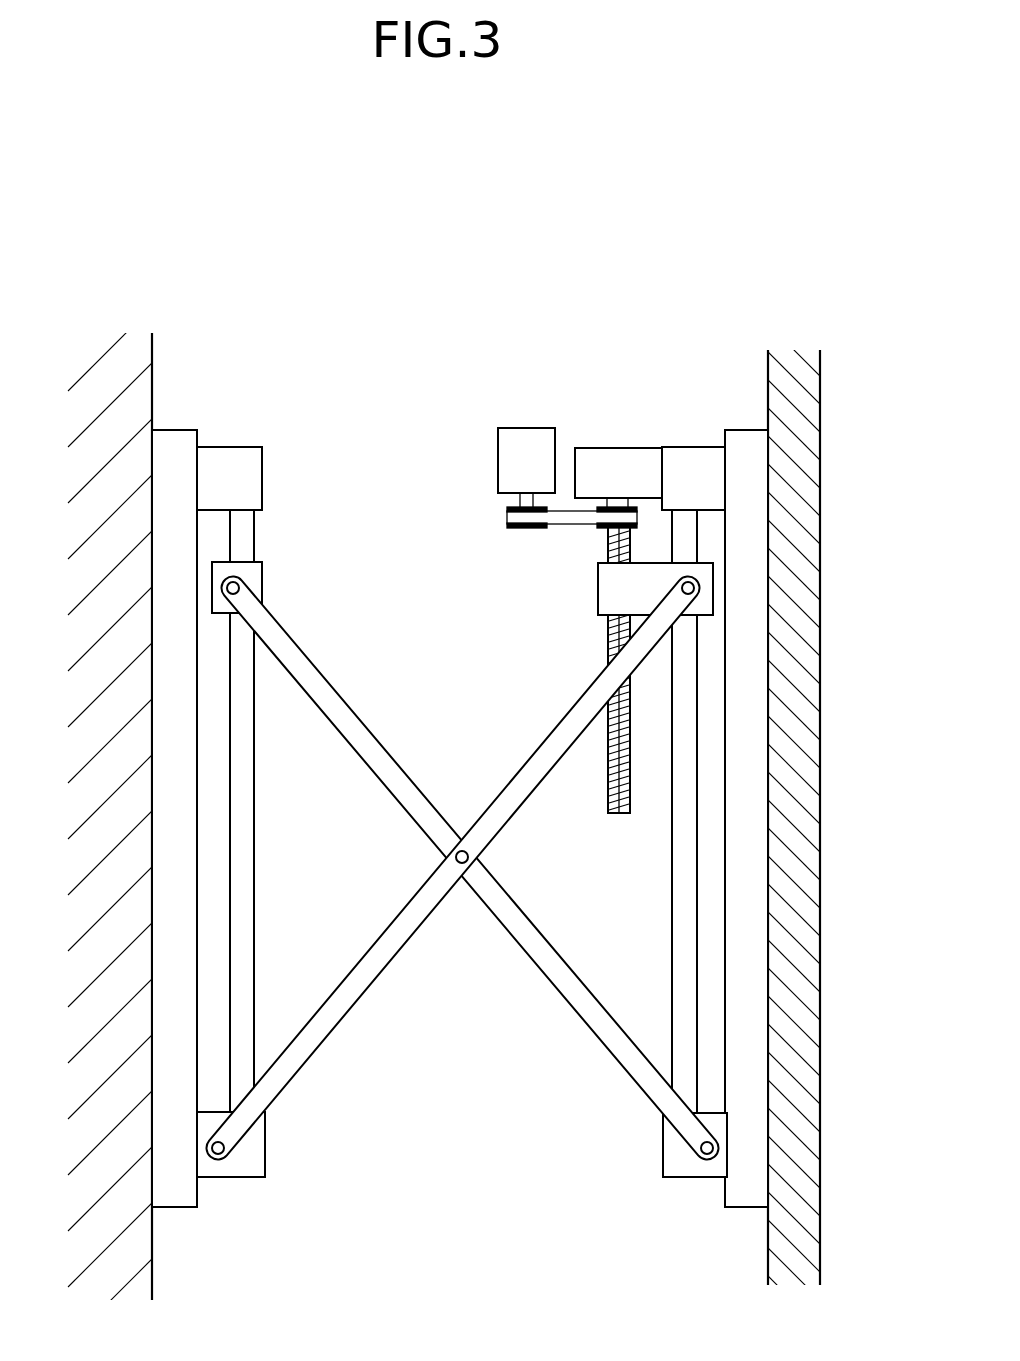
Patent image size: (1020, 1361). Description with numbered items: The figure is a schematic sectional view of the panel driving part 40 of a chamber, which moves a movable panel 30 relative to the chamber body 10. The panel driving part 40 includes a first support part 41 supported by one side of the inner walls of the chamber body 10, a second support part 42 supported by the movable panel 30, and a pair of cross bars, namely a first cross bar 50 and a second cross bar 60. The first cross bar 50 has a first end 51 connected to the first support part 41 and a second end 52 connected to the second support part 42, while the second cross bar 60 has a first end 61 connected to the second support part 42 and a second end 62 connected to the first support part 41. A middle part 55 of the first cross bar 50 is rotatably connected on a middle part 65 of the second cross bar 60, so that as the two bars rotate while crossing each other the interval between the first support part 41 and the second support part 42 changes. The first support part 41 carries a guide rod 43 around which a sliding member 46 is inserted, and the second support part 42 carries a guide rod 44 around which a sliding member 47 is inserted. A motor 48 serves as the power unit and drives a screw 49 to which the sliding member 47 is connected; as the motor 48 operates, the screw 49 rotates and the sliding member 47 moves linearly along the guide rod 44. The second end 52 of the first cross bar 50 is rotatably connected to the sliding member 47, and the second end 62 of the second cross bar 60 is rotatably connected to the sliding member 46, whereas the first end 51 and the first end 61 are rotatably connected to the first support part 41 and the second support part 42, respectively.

The chamber body 10 is at (152, 1255).
The movable panel 30 is at (772, 1243).
The panel driving part 40 is at (406, 486).
The first support part 41 is at (175, 445).
The second support part 42 is at (752, 443).
The guide rod 43 is at (242, 1018).
The guide rod 44 is at (682, 955).
The sliding member 46 is at (255, 572).
The sliding member 47 is at (620, 583).
The motor 48 is at (522, 440).
The screw 49 is at (608, 743).
The first cross bar 50 is at (357, 982).
The first end 51 is at (228, 1140).
The second end 52 is at (607, 622).
The middle part 55 is at (455, 852).
The second cross bar 60 is at (587, 1005).
The first end 61 is at (700, 1145).
The second end 62 is at (265, 605).
The middle part 65 is at (477, 863).